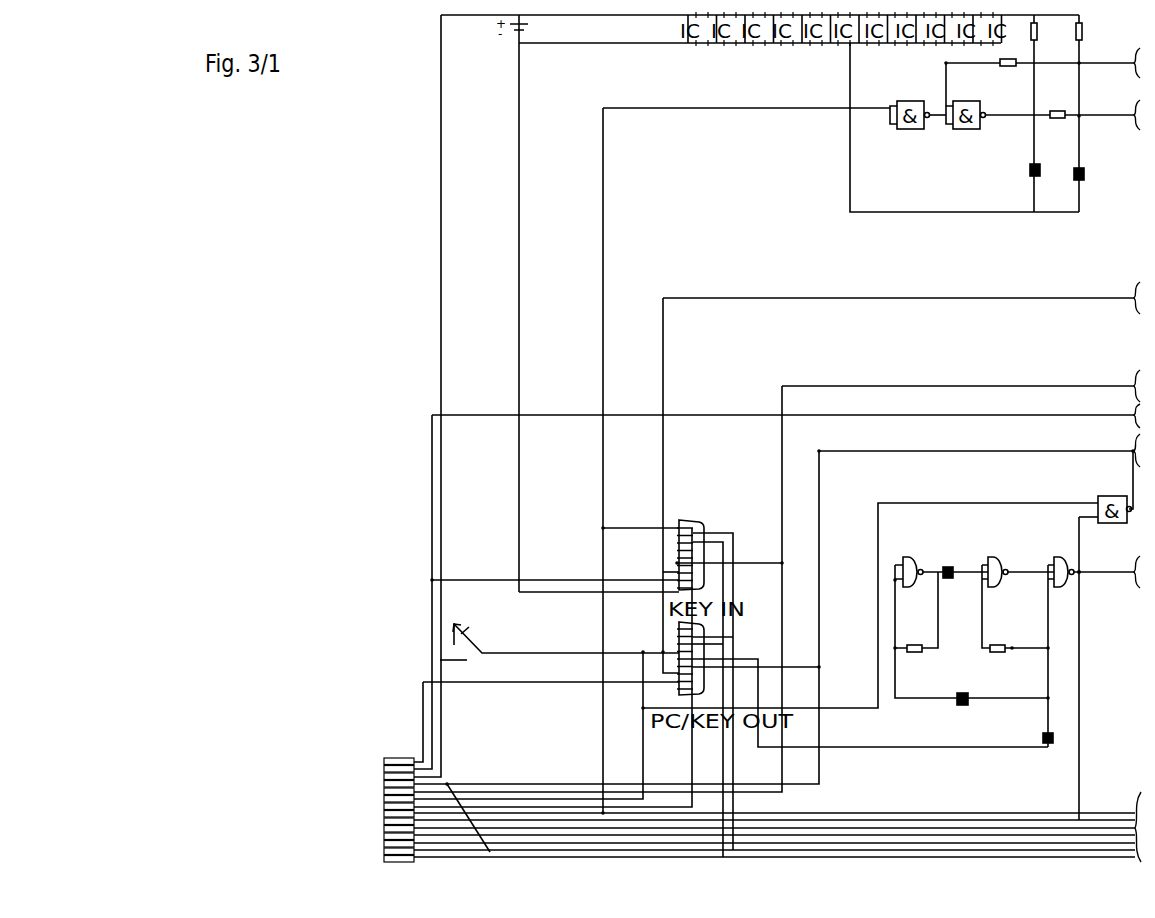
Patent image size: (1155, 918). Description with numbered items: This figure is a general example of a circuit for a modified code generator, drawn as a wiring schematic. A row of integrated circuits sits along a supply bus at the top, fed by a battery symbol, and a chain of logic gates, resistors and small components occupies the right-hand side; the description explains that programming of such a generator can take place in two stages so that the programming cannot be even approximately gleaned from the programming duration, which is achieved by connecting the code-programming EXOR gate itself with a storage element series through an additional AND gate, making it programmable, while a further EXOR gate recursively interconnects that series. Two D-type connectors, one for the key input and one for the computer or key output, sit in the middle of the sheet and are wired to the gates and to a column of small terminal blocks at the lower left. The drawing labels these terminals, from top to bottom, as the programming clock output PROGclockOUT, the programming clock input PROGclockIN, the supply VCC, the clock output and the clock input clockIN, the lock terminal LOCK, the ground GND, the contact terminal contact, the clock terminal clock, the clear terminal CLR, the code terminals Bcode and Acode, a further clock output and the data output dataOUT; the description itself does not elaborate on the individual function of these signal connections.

The programming clock output terminal PROGclockOUT is at (386, 762).
The programming clock input terminal PROGclockIN is at (386, 769).
The supply voltage terminal VCC is at (386, 777).
The clock IN terminal clockIN is at (386, 792).
The lock terminal LOCK is at (386, 799).
The ground terminal GND is at (386, 807).
The contact terminal contact is at (386, 814).
The clock terminal clock is at (386, 822).
The clear terminal CLR is at (386, 829).
The B code terminal Bcode is at (386, 837).
The A code terminal Acode is at (386, 844).
The data output terminal dataOUT is at (386, 859).